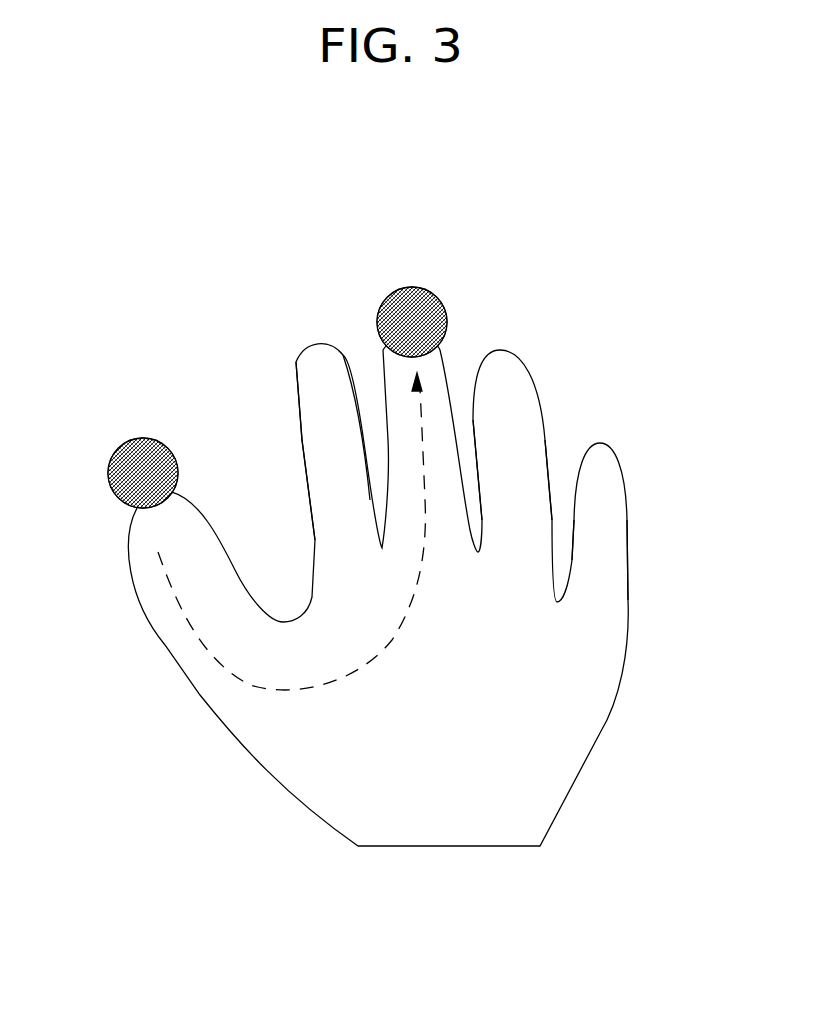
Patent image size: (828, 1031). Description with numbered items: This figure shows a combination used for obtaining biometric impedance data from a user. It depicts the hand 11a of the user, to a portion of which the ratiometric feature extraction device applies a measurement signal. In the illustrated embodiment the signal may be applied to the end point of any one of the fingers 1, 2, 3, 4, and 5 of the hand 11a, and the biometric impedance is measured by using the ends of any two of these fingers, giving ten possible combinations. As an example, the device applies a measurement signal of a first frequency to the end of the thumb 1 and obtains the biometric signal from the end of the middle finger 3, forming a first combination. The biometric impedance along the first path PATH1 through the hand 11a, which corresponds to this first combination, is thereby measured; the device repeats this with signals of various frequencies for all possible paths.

The thumb 1 is at (143, 449).
The finger 2 is at (333, 418).
The middle finger 3 is at (412, 299).
The finger 4 is at (512, 410).
The finger 5 is at (600, 497).
The hand 11a is at (600, 733).
The first path PATH1 is at (192, 622).